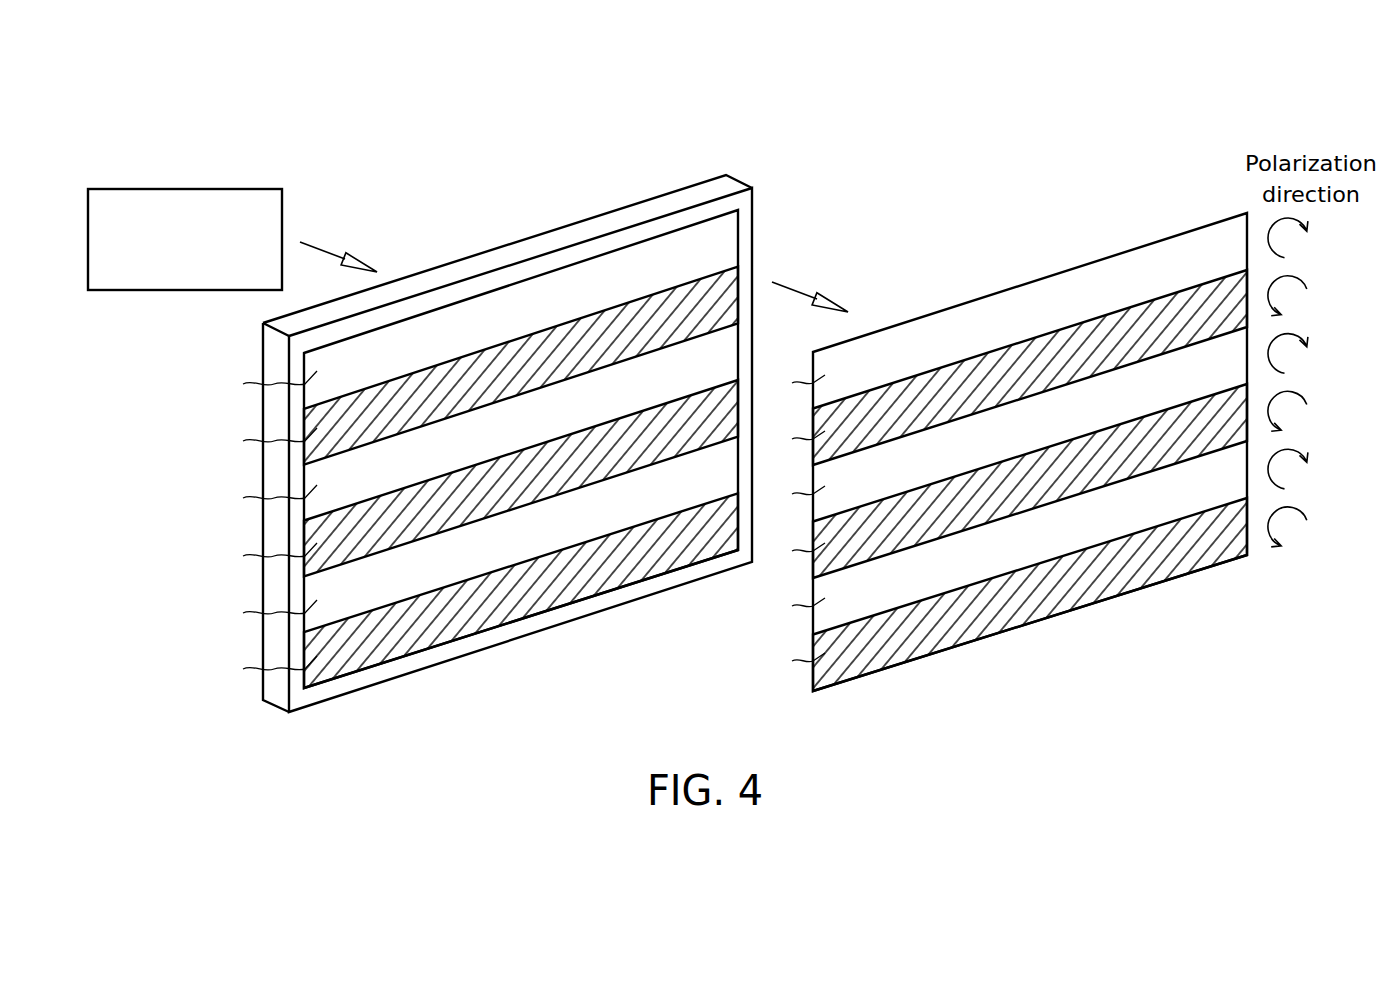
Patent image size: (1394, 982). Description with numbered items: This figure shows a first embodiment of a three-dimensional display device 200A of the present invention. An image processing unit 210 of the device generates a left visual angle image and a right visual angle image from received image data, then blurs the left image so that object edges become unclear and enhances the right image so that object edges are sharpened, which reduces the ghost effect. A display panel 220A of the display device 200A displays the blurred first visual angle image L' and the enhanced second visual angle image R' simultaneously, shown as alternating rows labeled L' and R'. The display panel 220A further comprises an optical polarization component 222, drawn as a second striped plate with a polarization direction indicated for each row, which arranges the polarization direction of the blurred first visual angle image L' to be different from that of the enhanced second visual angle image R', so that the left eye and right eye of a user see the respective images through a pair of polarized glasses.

The 3D display device 200A is at (1018, 95).
The image processing unit 210 is at (183, 189).
The display panel 220A is at (507, 256).
The optical polarization component 222 is at (1002, 255).